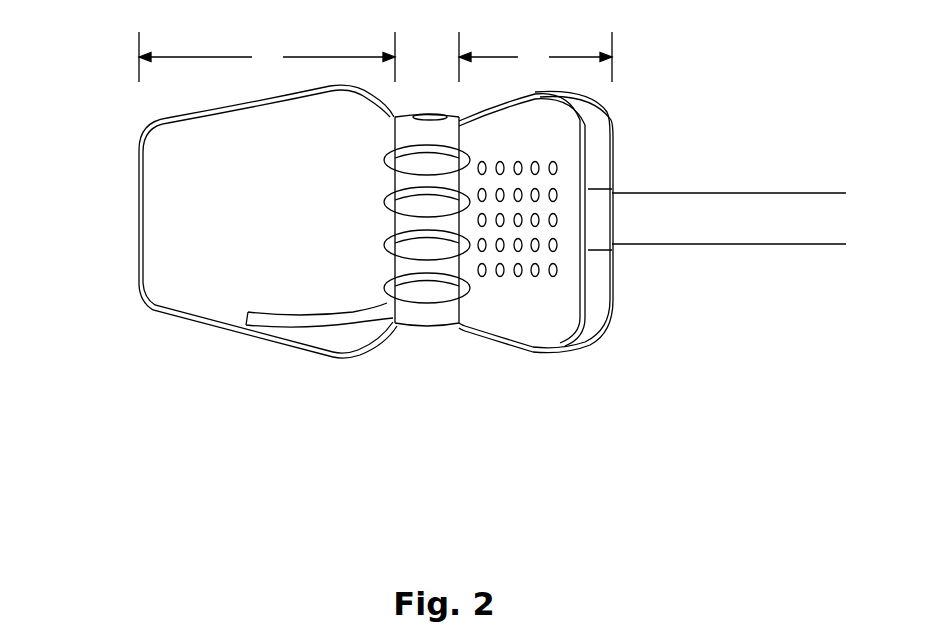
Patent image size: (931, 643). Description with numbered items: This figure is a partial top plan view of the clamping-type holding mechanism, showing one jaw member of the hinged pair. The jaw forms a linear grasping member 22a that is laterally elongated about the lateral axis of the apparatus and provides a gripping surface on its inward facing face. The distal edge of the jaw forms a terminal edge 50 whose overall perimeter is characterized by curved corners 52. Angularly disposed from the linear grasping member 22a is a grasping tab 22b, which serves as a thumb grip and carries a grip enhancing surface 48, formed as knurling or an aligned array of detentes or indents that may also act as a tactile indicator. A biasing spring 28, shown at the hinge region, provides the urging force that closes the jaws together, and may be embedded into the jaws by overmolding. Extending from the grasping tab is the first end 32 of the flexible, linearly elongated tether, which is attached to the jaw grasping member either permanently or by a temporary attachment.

The linear grasping member 22a is at (267, 57).
The grasping tab 22b is at (535, 57).
The biasing spring 28 is at (311, 330).
The first end 32 is at (748, 208).
The grip enhancing surface 48 is at (535, 270).
The terminal edge 50 is at (132, 206).
The curved corners 52 is at (151, 318).